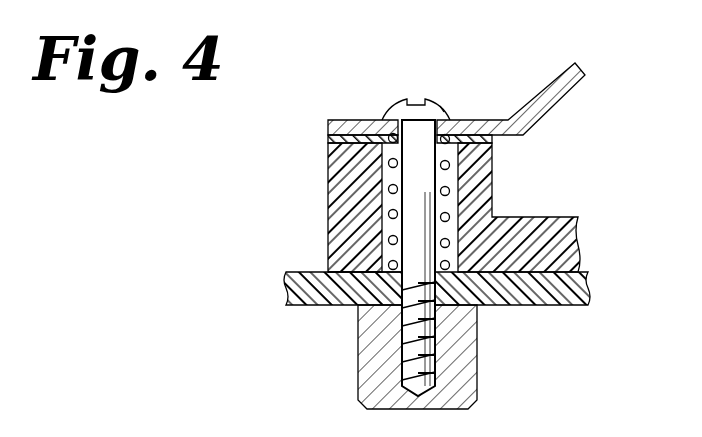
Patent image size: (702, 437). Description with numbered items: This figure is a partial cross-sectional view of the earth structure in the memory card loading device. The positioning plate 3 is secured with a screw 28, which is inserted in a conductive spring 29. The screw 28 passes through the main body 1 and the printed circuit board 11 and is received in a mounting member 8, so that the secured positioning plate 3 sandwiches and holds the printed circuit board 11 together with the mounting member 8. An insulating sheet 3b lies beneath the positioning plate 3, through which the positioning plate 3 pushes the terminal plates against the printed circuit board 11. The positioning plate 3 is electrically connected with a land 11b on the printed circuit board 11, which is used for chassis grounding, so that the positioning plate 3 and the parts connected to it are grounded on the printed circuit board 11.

The main body 1 is at (492, 172).
The positioning plate 3 is at (346, 120).
The insulating sheet 3b is at (328, 138).
The mounting member 8 is at (477, 350).
The printed circuit board 11 is at (302, 305).
The land 11b is at (340, 268).
The screw 28 is at (416, 137).
The conductive spring 29 is at (328, 167).